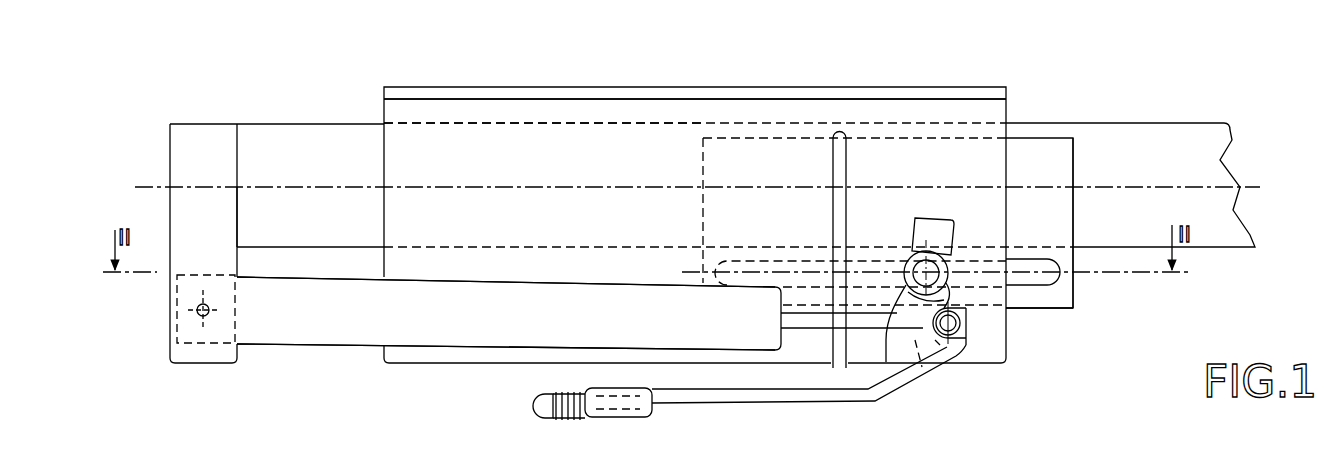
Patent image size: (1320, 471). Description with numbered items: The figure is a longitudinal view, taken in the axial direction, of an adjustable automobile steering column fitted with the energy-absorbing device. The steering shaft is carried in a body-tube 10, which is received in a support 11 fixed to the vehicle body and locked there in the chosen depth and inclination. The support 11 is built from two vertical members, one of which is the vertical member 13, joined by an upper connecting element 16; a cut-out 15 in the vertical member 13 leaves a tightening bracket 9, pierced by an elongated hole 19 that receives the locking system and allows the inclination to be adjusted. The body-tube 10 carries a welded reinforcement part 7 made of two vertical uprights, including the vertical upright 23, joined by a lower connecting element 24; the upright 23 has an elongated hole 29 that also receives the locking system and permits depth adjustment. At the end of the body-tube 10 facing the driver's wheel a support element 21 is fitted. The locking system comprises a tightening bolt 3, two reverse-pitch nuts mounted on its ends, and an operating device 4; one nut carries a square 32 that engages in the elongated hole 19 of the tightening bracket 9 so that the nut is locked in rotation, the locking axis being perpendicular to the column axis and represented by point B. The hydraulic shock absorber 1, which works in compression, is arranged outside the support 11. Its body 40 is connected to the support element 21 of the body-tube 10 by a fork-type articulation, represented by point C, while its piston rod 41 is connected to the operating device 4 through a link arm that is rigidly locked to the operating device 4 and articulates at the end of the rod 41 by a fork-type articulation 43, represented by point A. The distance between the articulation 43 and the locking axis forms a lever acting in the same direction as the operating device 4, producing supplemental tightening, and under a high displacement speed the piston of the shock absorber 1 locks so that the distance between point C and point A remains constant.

The hydraulic shock absorber 1 is at (452, 347).
The tightening bolt 3 is at (908, 262).
The operating device 4 is at (733, 395).
The reinforcement part 7 is at (1063, 298).
The tightening bracket 9 is at (916, 175).
The body-tube 10 is at (308, 175).
The support 11 is at (547, 82).
The vertical member 13 is at (590, 177).
The cut-out 15 is at (836, 357).
The upper connecting element 16 is at (697, 92).
The elongated hole 19 is at (886, 362).
The support element 21 is at (187, 222).
The vertical member 23 is at (1048, 177).
The lower connecting element 24 is at (1030, 314).
The elongated hole 29 is at (1047, 277).
The square 32 is at (935, 340).
The body 40 is at (298, 327).
The rod 41 is at (808, 325).
The articulation 43 is at (968, 342).
The point A is at (944, 340).
The point B is at (950, 247).
The point C is at (203, 317).